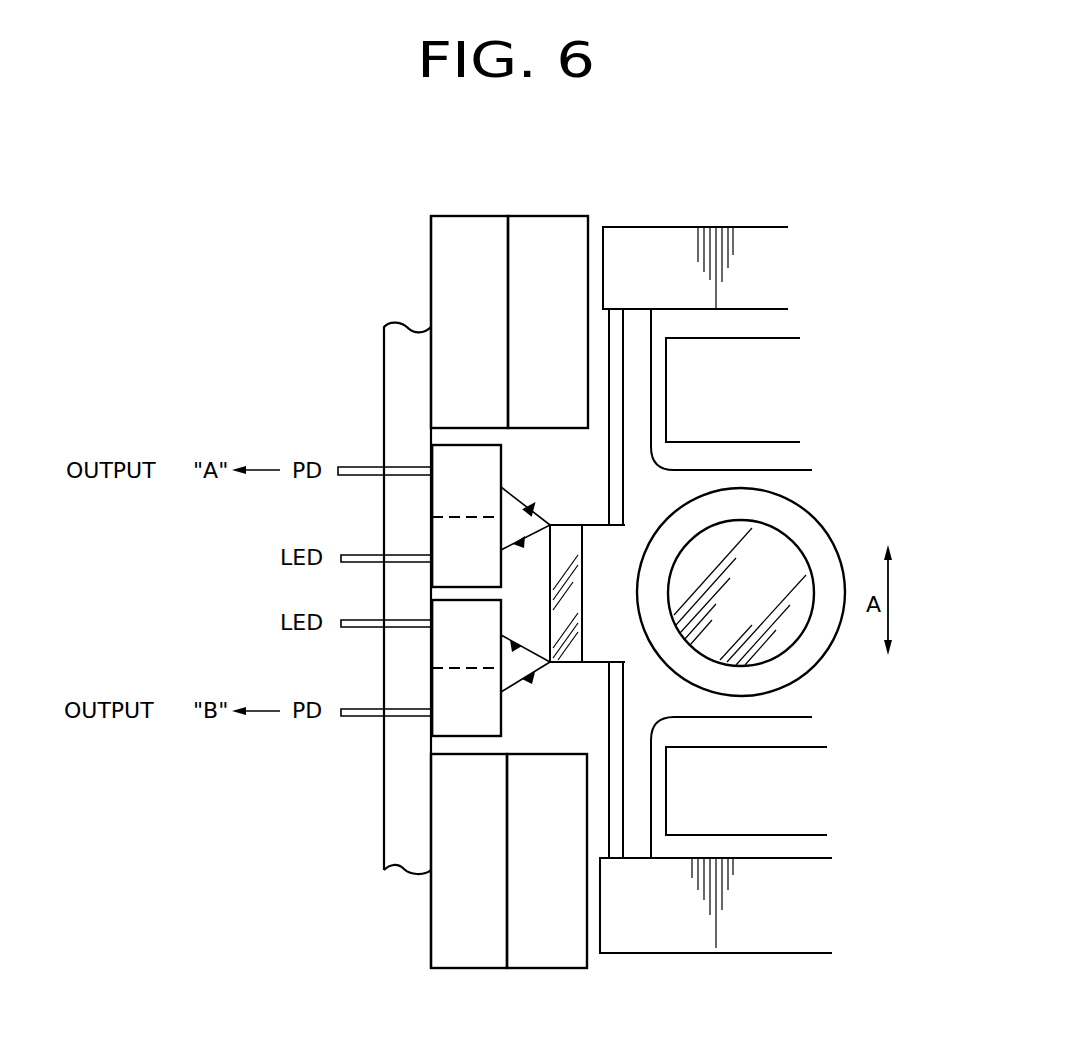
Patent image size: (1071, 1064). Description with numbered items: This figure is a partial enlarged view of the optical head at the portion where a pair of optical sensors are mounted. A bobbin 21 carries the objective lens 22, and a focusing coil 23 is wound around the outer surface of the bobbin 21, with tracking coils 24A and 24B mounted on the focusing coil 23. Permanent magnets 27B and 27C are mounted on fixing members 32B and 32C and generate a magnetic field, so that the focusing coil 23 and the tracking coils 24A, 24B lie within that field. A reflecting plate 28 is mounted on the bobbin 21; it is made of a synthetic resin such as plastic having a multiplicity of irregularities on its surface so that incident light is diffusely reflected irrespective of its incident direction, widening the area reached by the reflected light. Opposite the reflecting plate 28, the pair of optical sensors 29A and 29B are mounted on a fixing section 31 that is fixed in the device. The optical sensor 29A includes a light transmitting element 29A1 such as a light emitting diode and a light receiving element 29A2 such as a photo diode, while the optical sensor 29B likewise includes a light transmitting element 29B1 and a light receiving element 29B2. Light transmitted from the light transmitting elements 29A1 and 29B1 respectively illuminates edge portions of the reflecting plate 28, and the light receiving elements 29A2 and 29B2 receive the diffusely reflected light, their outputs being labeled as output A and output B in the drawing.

The bobbin 21 is at (638, 848).
The objective lens 22 is at (784, 555).
The focusing coil 23 is at (618, 330).
The tracking coil 24A is at (752, 255).
The tracking coil 24B is at (804, 926).
The permanent magnet 27B is at (552, 230).
The permanent magnet 27C is at (551, 945).
The reflecting plate 28 is at (570, 530).
The optical sensor 29A is at (366, 479).
The light transmitting element 29A1 is at (443, 535).
The light receiving element 29A2 is at (446, 463).
The optical sensor 29B is at (365, 711).
The light transmitting element 29B1 is at (442, 652).
The light receiving element 29B2 is at (443, 720).
The fixing section 31 is at (405, 853).
The fixing member 32B is at (474, 230).
The fixing member 32C is at (468, 945).